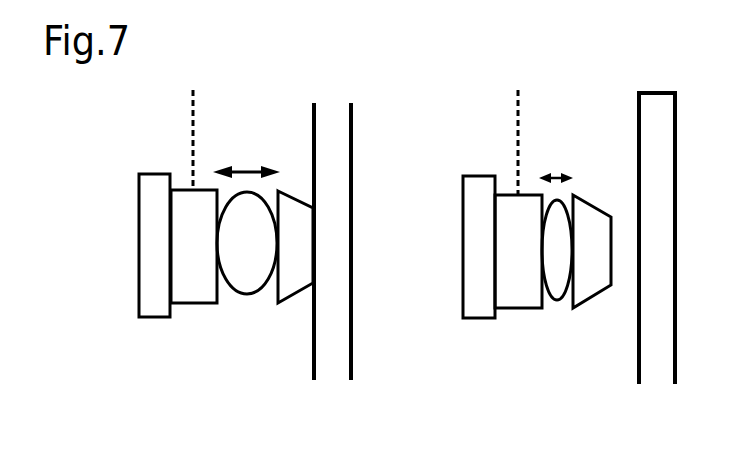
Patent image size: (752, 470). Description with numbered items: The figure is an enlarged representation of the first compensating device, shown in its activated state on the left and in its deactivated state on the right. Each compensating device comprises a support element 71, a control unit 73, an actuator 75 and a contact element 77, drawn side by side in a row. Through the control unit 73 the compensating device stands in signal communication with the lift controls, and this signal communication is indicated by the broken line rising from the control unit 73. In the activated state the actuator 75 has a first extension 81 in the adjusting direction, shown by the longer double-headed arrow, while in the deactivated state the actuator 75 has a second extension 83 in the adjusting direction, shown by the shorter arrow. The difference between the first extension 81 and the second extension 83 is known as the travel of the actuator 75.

The support element 71 is at (155, 285).
The control unit 73 is at (185, 285).
The actuator 75 is at (255, 269).
The contact element 77 is at (297, 277).
The first extension 81 is at (243, 170).
The second extension 83 is at (557, 176).